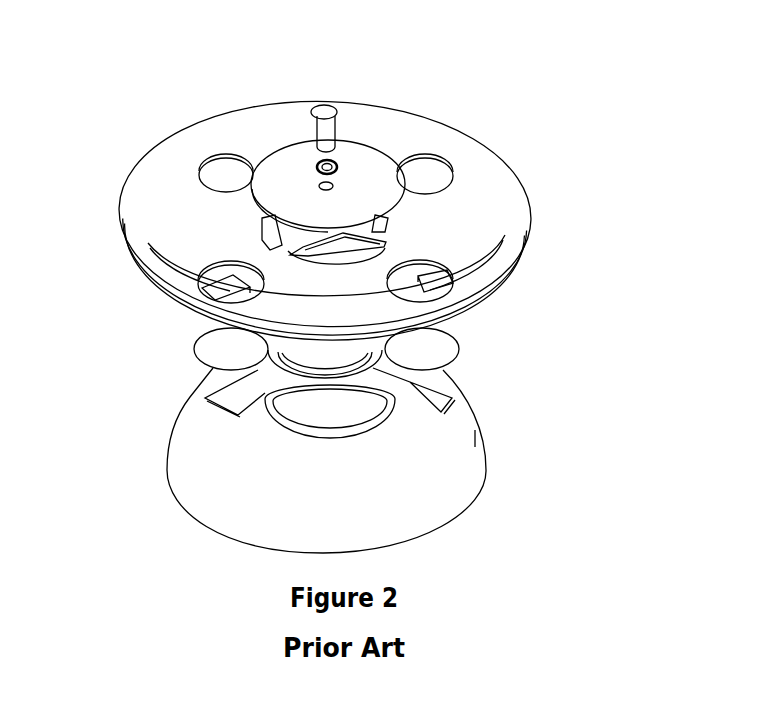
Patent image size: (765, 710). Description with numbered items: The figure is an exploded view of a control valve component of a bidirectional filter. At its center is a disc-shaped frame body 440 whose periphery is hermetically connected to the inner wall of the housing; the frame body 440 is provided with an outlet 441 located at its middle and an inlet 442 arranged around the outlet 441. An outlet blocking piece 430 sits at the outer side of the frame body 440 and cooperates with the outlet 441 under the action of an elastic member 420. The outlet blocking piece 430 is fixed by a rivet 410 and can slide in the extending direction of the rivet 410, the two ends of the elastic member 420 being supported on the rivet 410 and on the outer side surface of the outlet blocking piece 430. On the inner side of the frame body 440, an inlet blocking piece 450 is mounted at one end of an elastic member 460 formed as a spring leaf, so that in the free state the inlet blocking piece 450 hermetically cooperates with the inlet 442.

The rivet 410 is at (330, 118).
The elastic member 420 is at (338, 167).
The outlet blocking piece 430 is at (378, 202).
The frame body 440 is at (487, 243).
The outlet 441 is at (307, 237).
The inlet 442 is at (235, 265).
The inlet blocking piece 450 is at (442, 350).
The elastic member 460 is at (438, 402).